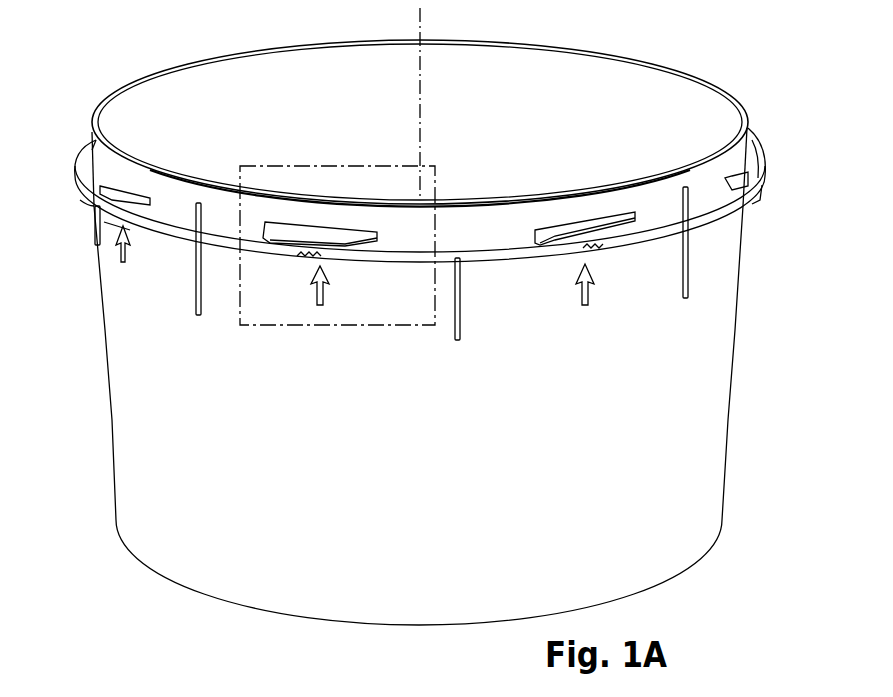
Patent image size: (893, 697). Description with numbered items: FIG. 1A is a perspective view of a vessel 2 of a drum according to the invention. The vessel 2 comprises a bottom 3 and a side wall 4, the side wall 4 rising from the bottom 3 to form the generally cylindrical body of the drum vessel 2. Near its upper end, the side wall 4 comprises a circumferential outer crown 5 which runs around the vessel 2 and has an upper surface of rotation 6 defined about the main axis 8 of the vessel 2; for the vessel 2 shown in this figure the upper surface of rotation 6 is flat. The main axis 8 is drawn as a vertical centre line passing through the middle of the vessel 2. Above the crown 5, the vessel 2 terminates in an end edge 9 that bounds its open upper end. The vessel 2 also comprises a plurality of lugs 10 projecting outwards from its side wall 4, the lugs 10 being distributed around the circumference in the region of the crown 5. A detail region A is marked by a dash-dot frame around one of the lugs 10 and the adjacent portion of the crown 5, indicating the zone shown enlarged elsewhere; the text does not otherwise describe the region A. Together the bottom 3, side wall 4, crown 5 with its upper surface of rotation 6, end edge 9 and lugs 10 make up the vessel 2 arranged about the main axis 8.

The vessel 2 is at (92, 540).
The bottom 3 is at (652, 581).
The side wall 4 is at (654, 400).
The circumferential outer crown 5 is at (78, 203).
The upper surface of rotation 6 is at (84, 153).
The main axis 8 is at (425, 18).
The end edge 9 is at (183, 61).
The lugs 10 is at (312, 230).
The detail region A is at (410, 330).